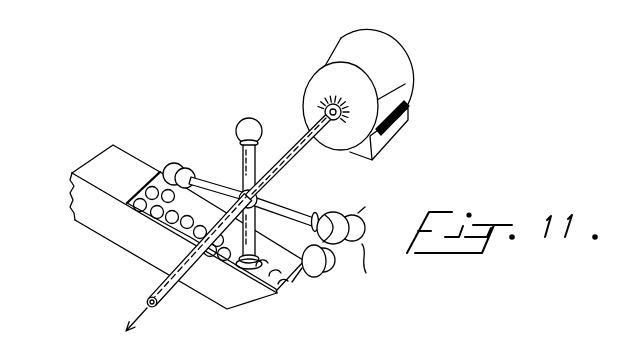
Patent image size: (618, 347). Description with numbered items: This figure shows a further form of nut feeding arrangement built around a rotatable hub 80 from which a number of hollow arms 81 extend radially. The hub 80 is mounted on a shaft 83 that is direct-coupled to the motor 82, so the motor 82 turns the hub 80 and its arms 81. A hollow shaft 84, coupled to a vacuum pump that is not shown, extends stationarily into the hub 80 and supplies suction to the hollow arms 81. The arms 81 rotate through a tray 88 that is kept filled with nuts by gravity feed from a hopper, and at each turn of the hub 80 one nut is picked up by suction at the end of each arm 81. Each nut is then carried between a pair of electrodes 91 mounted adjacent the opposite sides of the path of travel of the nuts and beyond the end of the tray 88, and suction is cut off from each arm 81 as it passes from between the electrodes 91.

The rotatable hub 80 is at (234, 194).
The hollow arms 81 is at (200, 172).
The motor 82 is at (349, 46).
The shaft 83 is at (281, 178).
The hollow shaft 84 is at (180, 262).
The tray 88 is at (90, 216).
The electrodes 91 is at (327, 264).